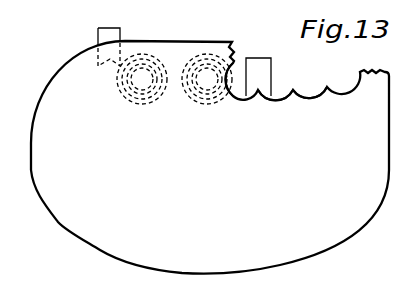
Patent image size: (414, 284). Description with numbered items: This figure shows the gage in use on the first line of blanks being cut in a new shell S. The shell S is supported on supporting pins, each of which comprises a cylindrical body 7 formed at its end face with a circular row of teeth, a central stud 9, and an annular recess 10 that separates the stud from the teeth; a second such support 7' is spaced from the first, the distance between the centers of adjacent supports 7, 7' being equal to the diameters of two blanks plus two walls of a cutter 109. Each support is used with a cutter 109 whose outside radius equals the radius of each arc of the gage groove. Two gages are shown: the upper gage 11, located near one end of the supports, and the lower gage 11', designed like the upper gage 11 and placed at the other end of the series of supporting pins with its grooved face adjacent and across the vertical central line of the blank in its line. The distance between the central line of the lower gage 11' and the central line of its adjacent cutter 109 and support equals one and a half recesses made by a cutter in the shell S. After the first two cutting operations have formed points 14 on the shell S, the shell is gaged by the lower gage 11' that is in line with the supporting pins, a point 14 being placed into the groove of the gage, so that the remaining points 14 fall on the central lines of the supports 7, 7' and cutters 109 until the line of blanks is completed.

The sheet S is at (210, 157).
The gage 11 is at (110, 35).
The gage 11' is at (265, 58).
The cylindrical body 7 is at (142, 93).
The perforation / coiled element 7' is at (225, 57).
The central stud 9 is at (200, 98).
The annular recess 10 is at (212, 100).
The cutter 109 is at (200, 55).
The points 14 is at (326, 88).